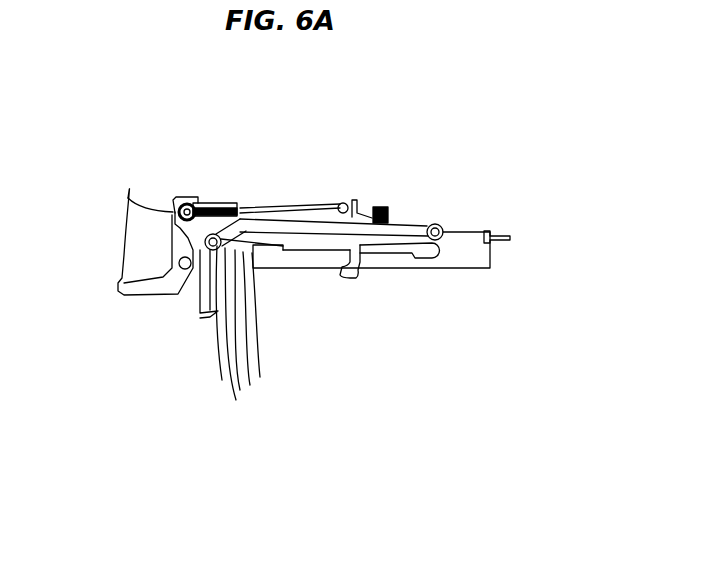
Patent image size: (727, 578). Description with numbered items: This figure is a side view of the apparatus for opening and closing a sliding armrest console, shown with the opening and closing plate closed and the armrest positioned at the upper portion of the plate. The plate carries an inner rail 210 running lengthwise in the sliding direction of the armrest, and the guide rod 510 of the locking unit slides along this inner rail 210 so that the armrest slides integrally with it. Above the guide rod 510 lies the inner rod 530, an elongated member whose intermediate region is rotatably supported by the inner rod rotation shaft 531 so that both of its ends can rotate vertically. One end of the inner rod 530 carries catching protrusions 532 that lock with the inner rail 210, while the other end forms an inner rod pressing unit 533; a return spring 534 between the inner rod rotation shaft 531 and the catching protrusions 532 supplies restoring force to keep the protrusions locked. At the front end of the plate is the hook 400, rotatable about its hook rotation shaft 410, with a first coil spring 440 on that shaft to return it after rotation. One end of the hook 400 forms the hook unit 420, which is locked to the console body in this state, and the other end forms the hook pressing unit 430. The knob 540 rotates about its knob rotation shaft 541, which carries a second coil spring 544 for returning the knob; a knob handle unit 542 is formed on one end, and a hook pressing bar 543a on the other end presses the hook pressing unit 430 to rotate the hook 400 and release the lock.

The knob 540 is at (260, 122).
The knob handle unit 542 is at (126, 232).
The knob rotation shaft 541 is at (128, 198).
The second coil spring 544 is at (198, 197).
The hook pressing bar 543a is at (232, 202).
The inner rod 530 is at (473, 152).
The inner rod pressing unit 533 is at (243, 207).
The inner rod rotation shaft 531 is at (342, 202).
The return spring 534 is at (385, 207).
The catching protrusions 532 is at (437, 224).
The guide rod 510 is at (313, 243).
The inner rail 210 is at (472, 266).
The hook 400 is at (333, 388).
The hook rotation shaft 410 is at (240, 390).
The hook unit 420 is at (203, 318).
The hook pressing unit 430 is at (260, 377).
The first coil spring 440 is at (250, 385).